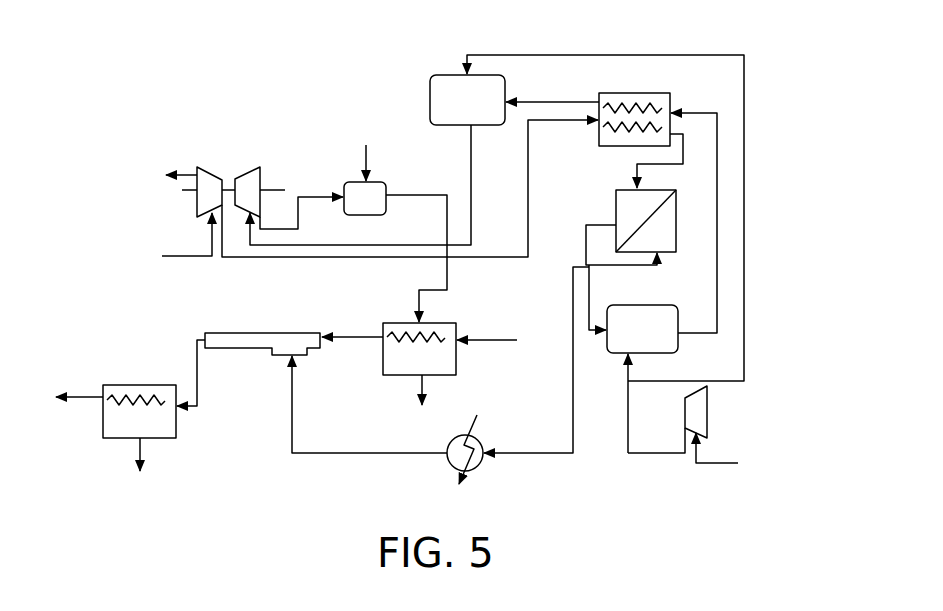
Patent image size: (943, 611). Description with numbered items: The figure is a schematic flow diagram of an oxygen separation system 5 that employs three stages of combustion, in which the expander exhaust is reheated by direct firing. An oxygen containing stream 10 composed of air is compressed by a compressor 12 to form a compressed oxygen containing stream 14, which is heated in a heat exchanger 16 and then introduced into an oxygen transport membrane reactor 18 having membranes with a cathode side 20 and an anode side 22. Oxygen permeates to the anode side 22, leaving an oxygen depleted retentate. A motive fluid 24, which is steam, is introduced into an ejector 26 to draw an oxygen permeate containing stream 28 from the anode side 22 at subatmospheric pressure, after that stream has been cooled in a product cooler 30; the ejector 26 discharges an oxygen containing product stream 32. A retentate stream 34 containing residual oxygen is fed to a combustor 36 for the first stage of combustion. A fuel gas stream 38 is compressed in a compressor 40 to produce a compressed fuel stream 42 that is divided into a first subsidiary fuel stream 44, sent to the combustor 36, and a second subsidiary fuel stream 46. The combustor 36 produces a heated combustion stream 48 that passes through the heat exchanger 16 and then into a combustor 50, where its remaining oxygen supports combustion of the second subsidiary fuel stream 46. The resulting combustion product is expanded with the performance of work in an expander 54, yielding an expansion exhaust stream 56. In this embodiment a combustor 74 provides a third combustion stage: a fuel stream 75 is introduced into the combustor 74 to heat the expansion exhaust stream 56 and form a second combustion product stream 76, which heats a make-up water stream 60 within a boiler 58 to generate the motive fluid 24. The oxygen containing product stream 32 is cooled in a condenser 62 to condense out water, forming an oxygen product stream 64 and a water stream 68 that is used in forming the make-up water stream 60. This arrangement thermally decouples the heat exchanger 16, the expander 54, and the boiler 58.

The oxygen separation system 5 is at (332, 66).
The oxygen containing stream 10 is at (190, 258).
The compressor 12 is at (212, 181).
The compressed oxygen containing stream 14 is at (273, 259).
The heat exchanger 16 is at (646, 93).
The oxygen transport membrane reactor 18 is at (615, 200).
The cathode side 20 is at (627, 192).
The anode side 22 is at (676, 228).
The motive fluid 24 is at (347, 333).
The ejector 26 is at (248, 343).
The oxygen permeate containing stream 28 is at (576, 420).
The product cooler 30 is at (452, 468).
The oxygen containing product stream 32 is at (194, 357).
The retentate stream 34 is at (586, 242).
The combustor 36 is at (643, 312).
The fuel gas stream 38 is at (713, 465).
The compressor 40 is at (704, 413).
The compressed fuel stream 42 is at (643, 455).
The first subsidiary fuel stream 44 is at (627, 376).
The second subsidiary fuel stream 46 is at (745, 343).
The heated combustion stream 48 is at (719, 308).
The combustor 50 is at (443, 90).
The expander 54 is at (248, 179).
The expansion exhaust stream 56 is at (313, 196).
The boiler 58 is at (398, 372).
The make-up water stream 60 is at (498, 338).
The condenser 62 is at (113, 420).
The oxygen product stream 64 is at (82, 397).
The water stream 68 is at (143, 443).
The combustor 74 is at (387, 182).
The fuel stream 75 is at (363, 172).
The second combustion product stream 76 is at (443, 220).